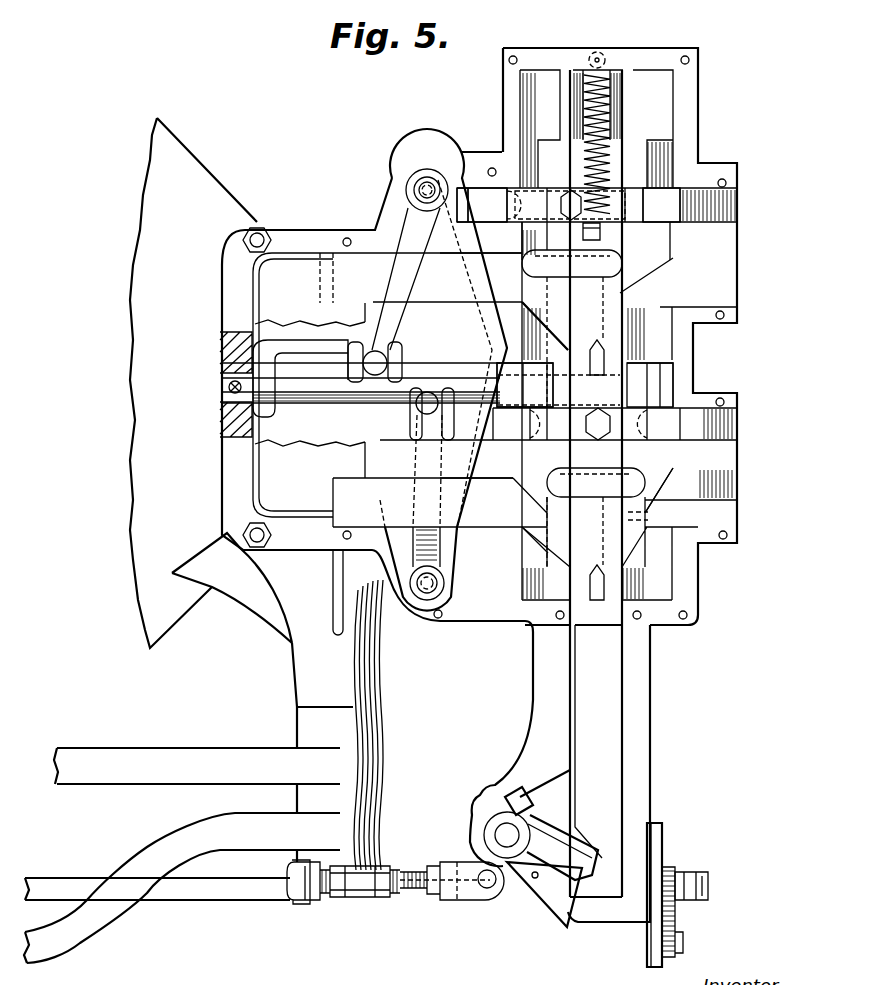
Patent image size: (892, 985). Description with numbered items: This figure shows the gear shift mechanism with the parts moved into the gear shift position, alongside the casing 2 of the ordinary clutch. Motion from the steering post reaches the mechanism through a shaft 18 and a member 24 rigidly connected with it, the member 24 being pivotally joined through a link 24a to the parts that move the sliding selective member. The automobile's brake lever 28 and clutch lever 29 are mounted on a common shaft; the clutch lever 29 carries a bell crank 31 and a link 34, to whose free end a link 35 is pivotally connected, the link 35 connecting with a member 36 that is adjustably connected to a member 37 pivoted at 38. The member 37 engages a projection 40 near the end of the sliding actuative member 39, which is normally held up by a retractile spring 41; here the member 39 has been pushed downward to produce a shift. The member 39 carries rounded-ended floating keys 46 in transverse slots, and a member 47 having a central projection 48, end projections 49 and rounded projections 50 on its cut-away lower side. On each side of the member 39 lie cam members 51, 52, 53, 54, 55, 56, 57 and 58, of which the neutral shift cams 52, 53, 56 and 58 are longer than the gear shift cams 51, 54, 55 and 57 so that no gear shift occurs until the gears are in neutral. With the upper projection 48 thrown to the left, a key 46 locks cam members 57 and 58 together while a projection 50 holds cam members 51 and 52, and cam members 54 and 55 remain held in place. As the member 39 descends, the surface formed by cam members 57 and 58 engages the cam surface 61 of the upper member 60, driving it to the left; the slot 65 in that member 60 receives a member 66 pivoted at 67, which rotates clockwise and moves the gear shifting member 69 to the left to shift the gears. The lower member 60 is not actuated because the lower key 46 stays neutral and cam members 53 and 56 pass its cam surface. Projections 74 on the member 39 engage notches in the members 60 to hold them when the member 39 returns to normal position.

The casing 2 is at (135, 400).
The shaft 18 is at (202, 895).
The member 24 is at (678, 918).
The link 24a is at (650, 880).
The brake lever 28 is at (197, 766).
The clutch lever 29 is at (182, 888).
The bell crank 31 is at (377, 898).
The link 34 is at (310, 900).
The link 35 is at (410, 893).
The member 36 is at (535, 877).
The member 37 is at (560, 842).
The pivot 38 is at (495, 835).
The sliding actuative member 39 is at (612, 715).
The projection 40 is at (583, 880).
The retractile spring 41 is at (607, 100).
The floating key 46 is at (593, 283).
The member 47 is at (737, 205).
The projection 48 is at (568, 198).
The projection 49 is at (482, 193).
The rounded projection 50 is at (512, 212).
The cam member 51 is at (662, 233).
The cam member 52 is at (637, 241).
The cam member 53 is at (640, 520).
The cam member 54 is at (660, 465).
The cam member 55 is at (535, 452).
The cam member 56 is at (555, 537).
The cam member 57 is at (527, 308).
The cam member 58 is at (557, 326).
The member 60 is at (745, 495).
The cam surface 61 is at (642, 275).
The slot 65 is at (432, 298).
The member 66 is at (413, 235).
The pivot 67 is at (415, 185).
The gear shifting member 69 is at (300, 342).
The projection 74 is at (597, 355).